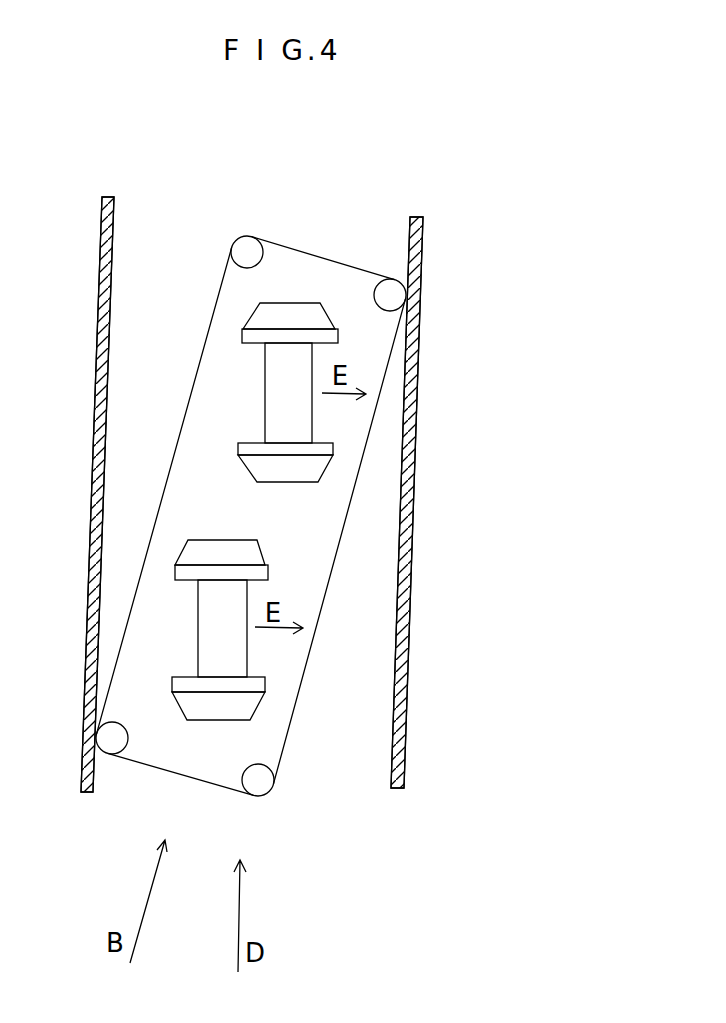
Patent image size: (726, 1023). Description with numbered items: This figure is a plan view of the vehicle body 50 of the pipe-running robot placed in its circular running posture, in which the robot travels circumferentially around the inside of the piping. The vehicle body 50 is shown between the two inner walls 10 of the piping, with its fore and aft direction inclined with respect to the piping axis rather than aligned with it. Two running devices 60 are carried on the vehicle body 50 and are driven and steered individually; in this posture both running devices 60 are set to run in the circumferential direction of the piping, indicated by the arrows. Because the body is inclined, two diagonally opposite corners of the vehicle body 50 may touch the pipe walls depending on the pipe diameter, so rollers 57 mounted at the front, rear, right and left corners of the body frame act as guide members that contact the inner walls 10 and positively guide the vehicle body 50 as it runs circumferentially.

The inner wall of piping 10 is at (392, 757).
The vehicle body 50 is at (377, 423).
The rollers 57 is at (250, 247).
The running devices 60 is at (255, 557).